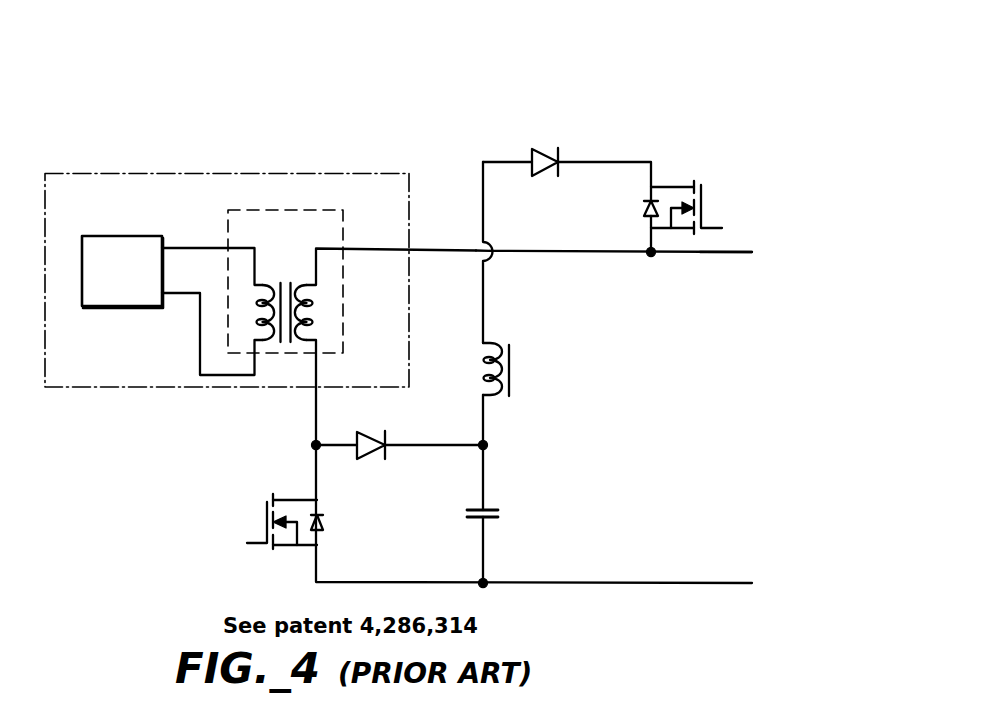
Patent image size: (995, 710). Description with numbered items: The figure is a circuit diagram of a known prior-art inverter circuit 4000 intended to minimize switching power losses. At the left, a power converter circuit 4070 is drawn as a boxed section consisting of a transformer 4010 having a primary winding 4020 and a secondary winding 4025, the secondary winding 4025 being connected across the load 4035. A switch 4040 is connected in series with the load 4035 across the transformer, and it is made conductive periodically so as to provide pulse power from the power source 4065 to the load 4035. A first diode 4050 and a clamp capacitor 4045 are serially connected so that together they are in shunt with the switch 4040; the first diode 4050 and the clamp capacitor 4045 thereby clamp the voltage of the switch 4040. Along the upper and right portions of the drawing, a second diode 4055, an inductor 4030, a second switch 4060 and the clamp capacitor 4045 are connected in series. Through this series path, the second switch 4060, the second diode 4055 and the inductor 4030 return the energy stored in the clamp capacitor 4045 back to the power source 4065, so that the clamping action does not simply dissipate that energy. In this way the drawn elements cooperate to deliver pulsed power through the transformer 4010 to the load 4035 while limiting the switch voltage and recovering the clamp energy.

The inverter circuit 4000 is at (682, 104).
The power converter circuit 4070 is at (138, 173).
The transformer 4010 is at (283, 209).
The secondary winding 4025 is at (265, 282).
The primary winding 4020 is at (308, 282).
The load 4035 is at (143, 309).
The second diode 4055 is at (542, 150).
The second switch 4060 is at (707, 228).
The power source 4065 is at (750, 288).
The inductor 4030 is at (510, 373).
The clamp capacitor 4045 is at (490, 510).
The first diode 4050 is at (385, 453).
The switch 4040 is at (260, 542).